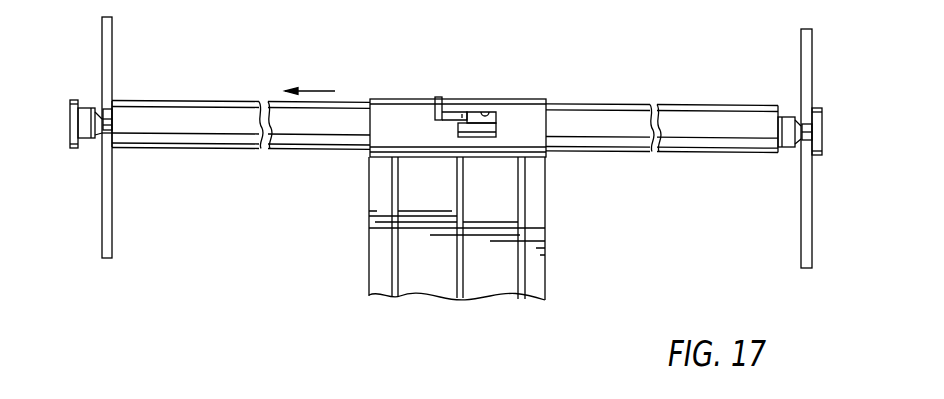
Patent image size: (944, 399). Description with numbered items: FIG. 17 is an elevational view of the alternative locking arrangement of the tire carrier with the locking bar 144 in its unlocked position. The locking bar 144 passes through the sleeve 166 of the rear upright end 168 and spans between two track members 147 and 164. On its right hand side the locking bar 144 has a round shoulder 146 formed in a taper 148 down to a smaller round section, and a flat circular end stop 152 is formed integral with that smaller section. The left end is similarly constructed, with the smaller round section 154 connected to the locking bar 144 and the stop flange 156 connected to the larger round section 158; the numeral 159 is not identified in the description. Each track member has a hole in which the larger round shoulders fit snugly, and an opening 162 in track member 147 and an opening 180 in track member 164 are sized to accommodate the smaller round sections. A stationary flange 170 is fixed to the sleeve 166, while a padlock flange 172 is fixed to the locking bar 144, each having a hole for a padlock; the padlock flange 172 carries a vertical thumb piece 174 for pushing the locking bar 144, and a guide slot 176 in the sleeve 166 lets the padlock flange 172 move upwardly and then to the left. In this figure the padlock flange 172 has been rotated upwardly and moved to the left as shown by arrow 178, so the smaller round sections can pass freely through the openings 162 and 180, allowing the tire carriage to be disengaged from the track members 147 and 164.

The locking bar 144 is at (712, 105).
The round shoulder 146 is at (787, 150).
The track member 147 is at (105, 35).
The taper 148 is at (797, 122).
The flat circular end stop 152 is at (822, 113).
The smaller round section 154 is at (113, 110).
The stop flange 156 is at (72, 102).
The larger round section 158 is at (88, 108).
The tapered hub 159 is at (97, 138).
The opening 162 is at (115, 122).
The track member 164 is at (813, 63).
The sleeve 166 is at (537, 112).
The rear upright end 168 is at (540, 272).
The stationary flange 170 is at (482, 132).
The padlock flange 172 is at (457, 112).
The vertical thumb piece 174 is at (437, 96).
The guide slot 176 is at (488, 113).
The arrow 178 is at (318, 90).
The opening 180 is at (807, 128).